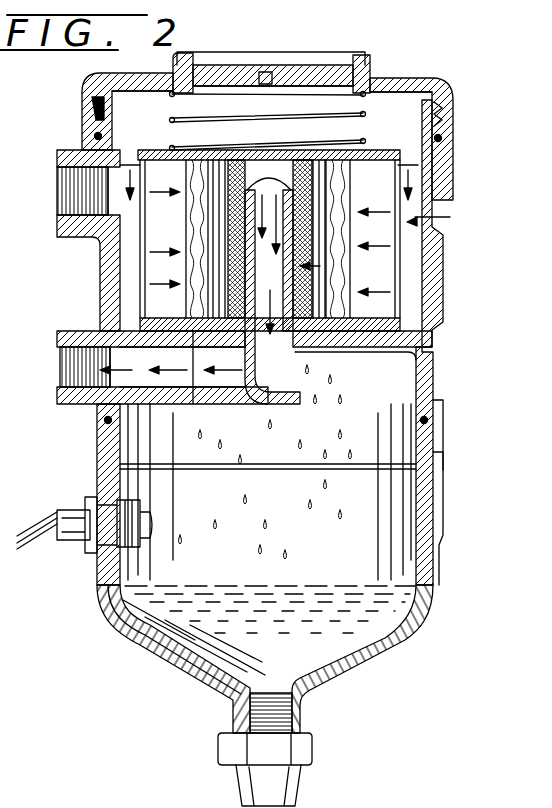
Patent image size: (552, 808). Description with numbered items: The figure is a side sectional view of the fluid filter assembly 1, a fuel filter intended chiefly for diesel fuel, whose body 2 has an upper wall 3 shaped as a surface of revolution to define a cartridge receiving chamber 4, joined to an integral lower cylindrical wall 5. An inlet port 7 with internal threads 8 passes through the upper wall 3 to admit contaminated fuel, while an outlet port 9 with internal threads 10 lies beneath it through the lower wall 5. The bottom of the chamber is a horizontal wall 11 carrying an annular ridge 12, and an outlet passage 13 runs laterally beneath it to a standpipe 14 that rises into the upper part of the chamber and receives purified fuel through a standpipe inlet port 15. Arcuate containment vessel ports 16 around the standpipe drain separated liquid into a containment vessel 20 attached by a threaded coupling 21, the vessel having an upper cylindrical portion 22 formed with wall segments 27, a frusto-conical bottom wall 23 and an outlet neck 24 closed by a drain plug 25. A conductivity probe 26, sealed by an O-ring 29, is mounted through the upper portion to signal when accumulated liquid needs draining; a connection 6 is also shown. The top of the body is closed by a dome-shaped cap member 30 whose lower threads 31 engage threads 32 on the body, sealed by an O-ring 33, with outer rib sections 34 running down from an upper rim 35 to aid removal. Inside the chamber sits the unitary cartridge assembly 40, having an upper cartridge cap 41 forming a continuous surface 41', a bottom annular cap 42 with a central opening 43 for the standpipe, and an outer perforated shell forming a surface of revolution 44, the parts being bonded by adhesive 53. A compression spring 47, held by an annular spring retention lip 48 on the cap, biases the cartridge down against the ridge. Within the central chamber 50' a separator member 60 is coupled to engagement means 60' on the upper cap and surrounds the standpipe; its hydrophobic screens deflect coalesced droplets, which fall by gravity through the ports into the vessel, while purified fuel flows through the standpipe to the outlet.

The fluid filter assembly 1 is at (64, 121).
The body 2 is at (440, 196).
The upper wall 3 is at (466, 259).
The cartridge receiving chamber 4 is at (390, 125).
The lower cylindrical wall 5 is at (433, 383).
The connection 6 is at (6, 464).
The inlet port 7 is at (74, 152).
The internal threads 8 is at (78, 206).
The outlet port 9 is at (70, 343).
The internal threads 10 is at (60, 388).
The horizontal wall 11 is at (432, 341).
The annular ridge 12 is at (396, 324).
The outlet passage 13 is at (163, 405).
The standpipe 14 is at (300, 250).
The standpipe inlet port 15 is at (225, 233).
The containment vessel ports 16 is at (352, 360).
The containment vessel 20 is at (446, 542).
The threaded coupling 21 is at (436, 452).
The upper cylindrical portion 22 is at (425, 520).
The frusto-conical bottom wall 23 is at (365, 652).
The outlet neck 24 is at (305, 712).
The drain plug 25 is at (255, 740).
The conductivity probe 26 is at (85, 548).
The wall segments 27 is at (423, 547).
The O-ring 29 is at (98, 553).
The cap member 30 is at (384, 70).
The lower threads 31 is at (448, 110).
The threads 32 is at (445, 84).
The O-ring 33 is at (444, 139).
The outer rib sections 34 is at (434, 80).
The upper rim 35 is at (360, 54).
The cartridge assembly 40 is at (361, 291).
The upper cartridge cap 41 is at (328, 121).
The continuous surface 41' is at (378, 131).
The bottom annular cap 42 is at (340, 328).
The central opening 43 is at (317, 338).
The surface of revolution 44 is at (0, 302).
The compression spring 47 is at (165, 117).
The annular spring retention lip 48 is at (176, 92).
The central chamber 50' is at (283, 73).
The adhesive 53 is at (163, 149).
The separator member 60 is at (285, 239).
The engagement means 60' is at (177, 185).